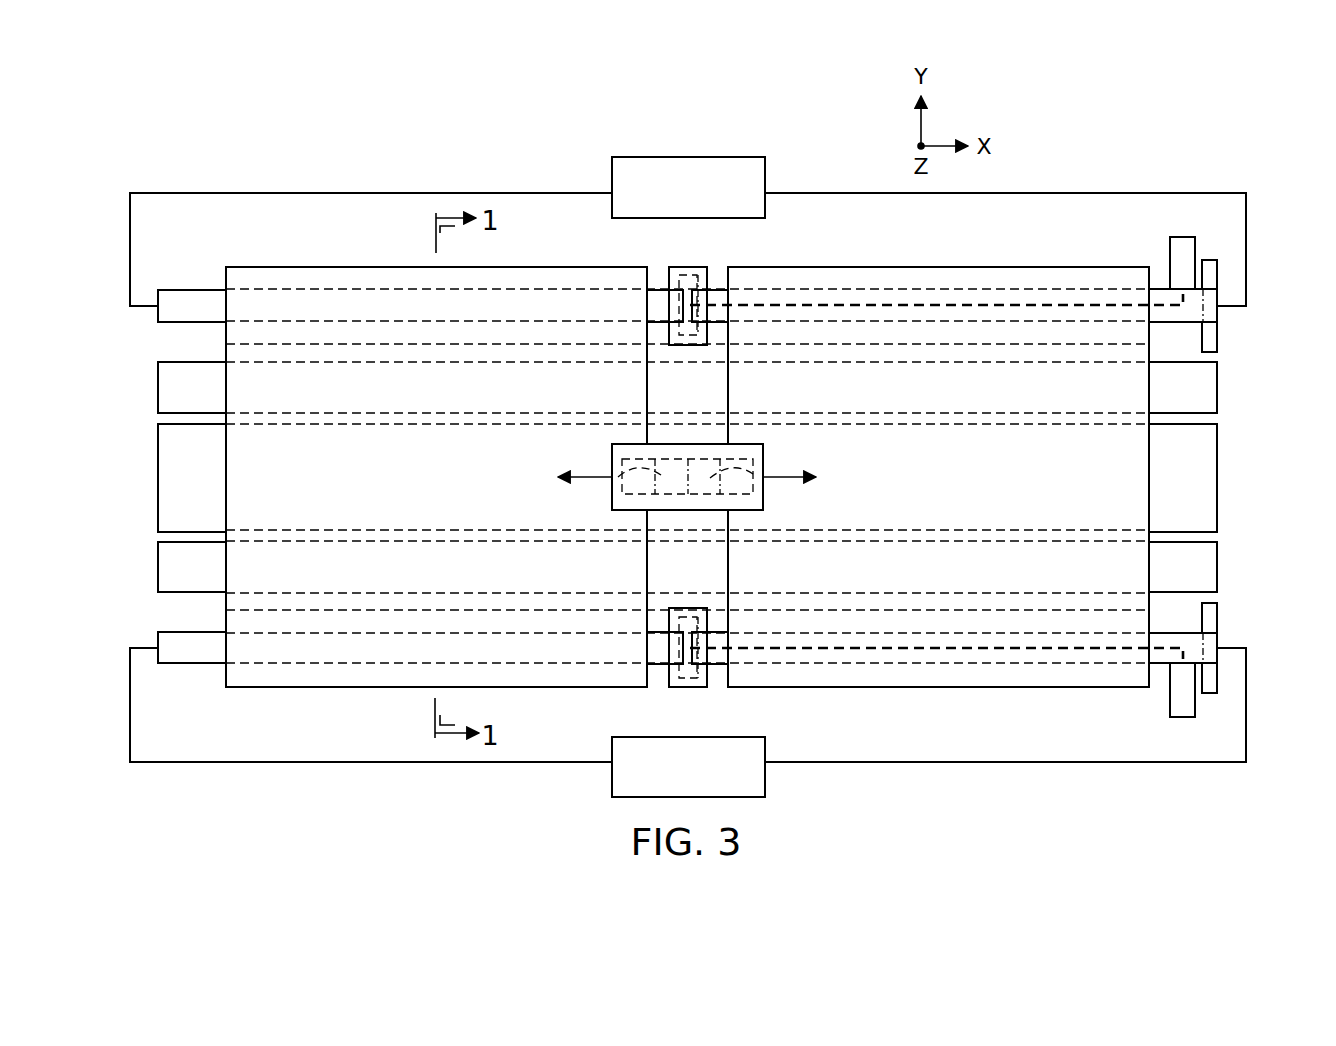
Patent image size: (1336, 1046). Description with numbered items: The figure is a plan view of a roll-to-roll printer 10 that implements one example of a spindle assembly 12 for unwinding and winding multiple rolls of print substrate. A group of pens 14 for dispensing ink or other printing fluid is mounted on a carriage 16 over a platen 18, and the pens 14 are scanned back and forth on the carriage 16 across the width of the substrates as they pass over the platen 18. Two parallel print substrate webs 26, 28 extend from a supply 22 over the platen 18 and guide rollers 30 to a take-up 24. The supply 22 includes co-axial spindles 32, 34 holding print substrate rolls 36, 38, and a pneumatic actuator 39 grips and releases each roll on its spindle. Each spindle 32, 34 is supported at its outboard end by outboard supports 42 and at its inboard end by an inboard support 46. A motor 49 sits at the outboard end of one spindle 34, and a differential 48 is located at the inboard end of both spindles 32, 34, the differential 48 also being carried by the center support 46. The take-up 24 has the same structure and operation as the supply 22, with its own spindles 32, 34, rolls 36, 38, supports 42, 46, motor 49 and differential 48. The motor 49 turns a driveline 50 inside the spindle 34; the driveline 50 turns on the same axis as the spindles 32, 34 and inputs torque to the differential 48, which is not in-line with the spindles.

The roll-to-roll printer 10 is at (466, 126).
The spindle assembly 12 is at (708, 242).
The pens 14 is at (622, 486).
The carriage 16 is at (765, 472).
The platen 18 is at (1217, 480).
The supply 22 is at (1128, 246).
The take-up 24 is at (1126, 712).
The print substrate web 26 is at (330, 267).
The print substrate web 28 is at (1040, 267).
The guide rollers 30 is at (1217, 392).
The spindle 32 is at (158, 312).
The spindle 34 is at (1217, 312).
The print substrate roll 36 is at (225, 282).
The print substrate roll 38 is at (1158, 690).
The pneumatic actuator 39 is at (688, 157).
The outboard supports 42 is at (1220, 276).
The inboard support 46 is at (669, 282).
The differential 48 is at (710, 282).
The motor 49 is at (1182, 237).
The driveline 50 is at (930, 302).